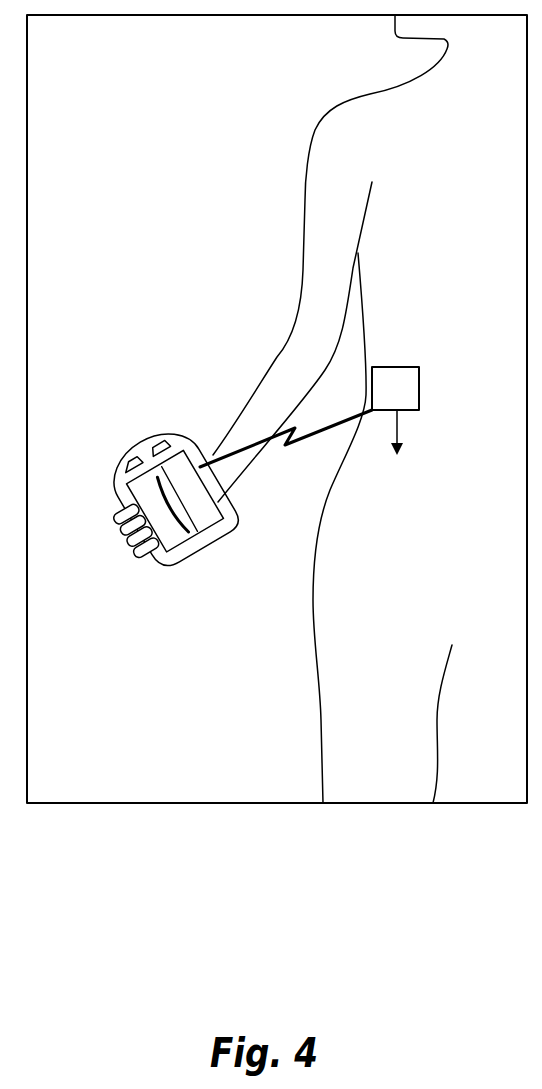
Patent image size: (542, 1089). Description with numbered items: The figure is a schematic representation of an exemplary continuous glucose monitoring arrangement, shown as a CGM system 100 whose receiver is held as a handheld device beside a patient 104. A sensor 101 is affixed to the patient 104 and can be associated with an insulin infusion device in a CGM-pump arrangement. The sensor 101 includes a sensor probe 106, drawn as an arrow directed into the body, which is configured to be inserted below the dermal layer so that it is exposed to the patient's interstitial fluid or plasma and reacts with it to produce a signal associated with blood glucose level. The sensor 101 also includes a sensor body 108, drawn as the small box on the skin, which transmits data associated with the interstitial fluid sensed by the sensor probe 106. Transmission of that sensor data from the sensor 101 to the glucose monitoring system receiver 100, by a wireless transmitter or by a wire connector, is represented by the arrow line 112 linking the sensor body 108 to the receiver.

The CGM system 100 is at (104, 483).
The sensor 101 is at (430, 329).
The patient 104 is at (343, 90).
The sensor probe 106 is at (397, 423).
The sensor body 108 is at (419, 388).
The arrow line 112 is at (252, 447).